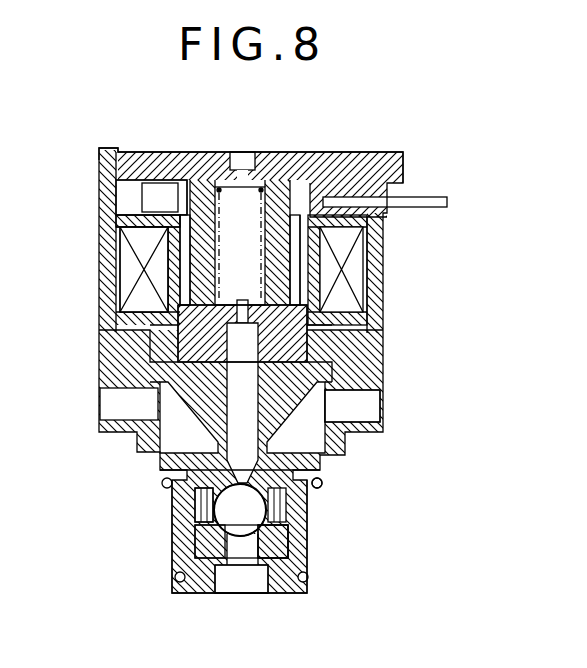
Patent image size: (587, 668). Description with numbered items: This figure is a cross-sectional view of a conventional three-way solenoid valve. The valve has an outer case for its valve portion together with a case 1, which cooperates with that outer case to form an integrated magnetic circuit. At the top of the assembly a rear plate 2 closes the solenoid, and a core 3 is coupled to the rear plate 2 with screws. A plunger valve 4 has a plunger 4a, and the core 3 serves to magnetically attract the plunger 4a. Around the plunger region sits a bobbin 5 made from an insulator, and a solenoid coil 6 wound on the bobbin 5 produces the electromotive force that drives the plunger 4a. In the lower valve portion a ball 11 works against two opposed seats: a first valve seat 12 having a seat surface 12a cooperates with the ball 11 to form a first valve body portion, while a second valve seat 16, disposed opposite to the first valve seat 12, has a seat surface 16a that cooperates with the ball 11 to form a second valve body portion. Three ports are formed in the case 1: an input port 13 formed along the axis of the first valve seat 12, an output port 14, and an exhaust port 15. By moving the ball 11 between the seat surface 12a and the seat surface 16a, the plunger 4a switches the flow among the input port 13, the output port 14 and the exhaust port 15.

The case 1 is at (103, 196).
The rear plate 2 is at (160, 152).
The core 3 is at (281, 152).
The plunger valve 4 is at (316, 314).
The plunger 4a is at (192, 318).
The bobbin 5 is at (115, 225).
The solenoid coil 6 is at (132, 270).
The ball 11 is at (185, 533).
The first valve seat 12 is at (305, 565).
The seat surface 12a is at (292, 533).
The input port 13 is at (240, 595).
The output port 14 is at (183, 517).
The exhaust port 15 is at (367, 408).
The second valve seat 16 is at (320, 470).
The seat surface 16a is at (300, 510).